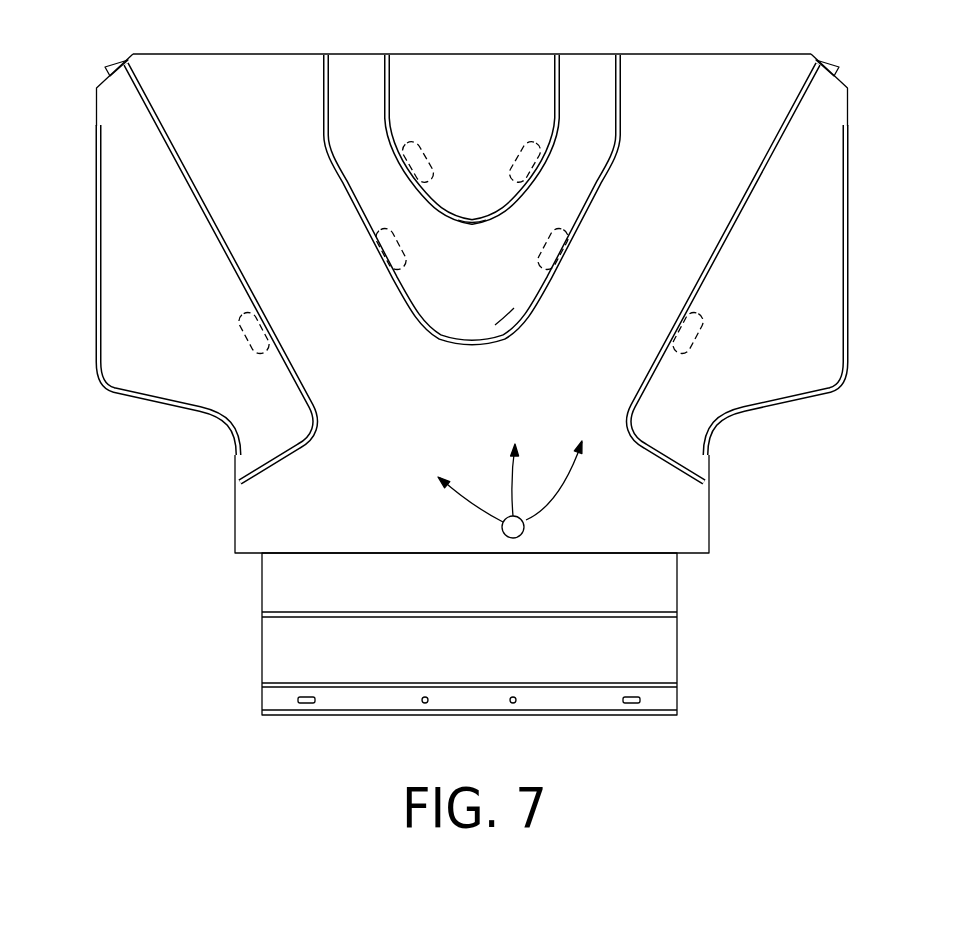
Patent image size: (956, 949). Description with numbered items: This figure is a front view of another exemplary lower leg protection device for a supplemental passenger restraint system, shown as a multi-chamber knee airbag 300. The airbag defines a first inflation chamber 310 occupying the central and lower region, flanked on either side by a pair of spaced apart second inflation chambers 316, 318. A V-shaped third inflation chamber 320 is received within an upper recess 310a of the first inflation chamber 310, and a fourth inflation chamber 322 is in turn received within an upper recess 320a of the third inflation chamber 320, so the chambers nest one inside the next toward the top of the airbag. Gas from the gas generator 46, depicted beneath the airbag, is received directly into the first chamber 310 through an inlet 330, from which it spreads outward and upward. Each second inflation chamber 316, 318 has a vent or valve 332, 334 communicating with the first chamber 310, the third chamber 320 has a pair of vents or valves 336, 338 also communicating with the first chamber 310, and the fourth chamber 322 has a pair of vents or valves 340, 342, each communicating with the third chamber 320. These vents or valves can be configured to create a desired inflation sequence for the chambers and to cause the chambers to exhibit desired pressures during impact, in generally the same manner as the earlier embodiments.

The multi-chamber knee airbag 300 is at (122, 433).
The first inflation chamber 310 is at (495, 432).
The upper recess of the first inflation chamber 310a is at (532, 305).
The second inflation chamber 316 is at (190, 292).
The second inflation chamber 318 is at (797, 291).
The V-shaped third inflation chamber 320 is at (493, 304).
The upper recess of the third inflation chamber 320a is at (510, 208).
The fourth inflation chamber 322 is at (497, 110).
The inlet 330 is at (530, 534).
The vent or valve 332 is at (247, 345).
The vent or valve 334 is at (695, 345).
The vent or valve 336 is at (378, 258).
The vent or valve 338 is at (575, 260).
The vent or valve 340 is at (410, 172).
The vent or valve 342 is at (540, 172).
The gas generator 46 is at (273, 597).